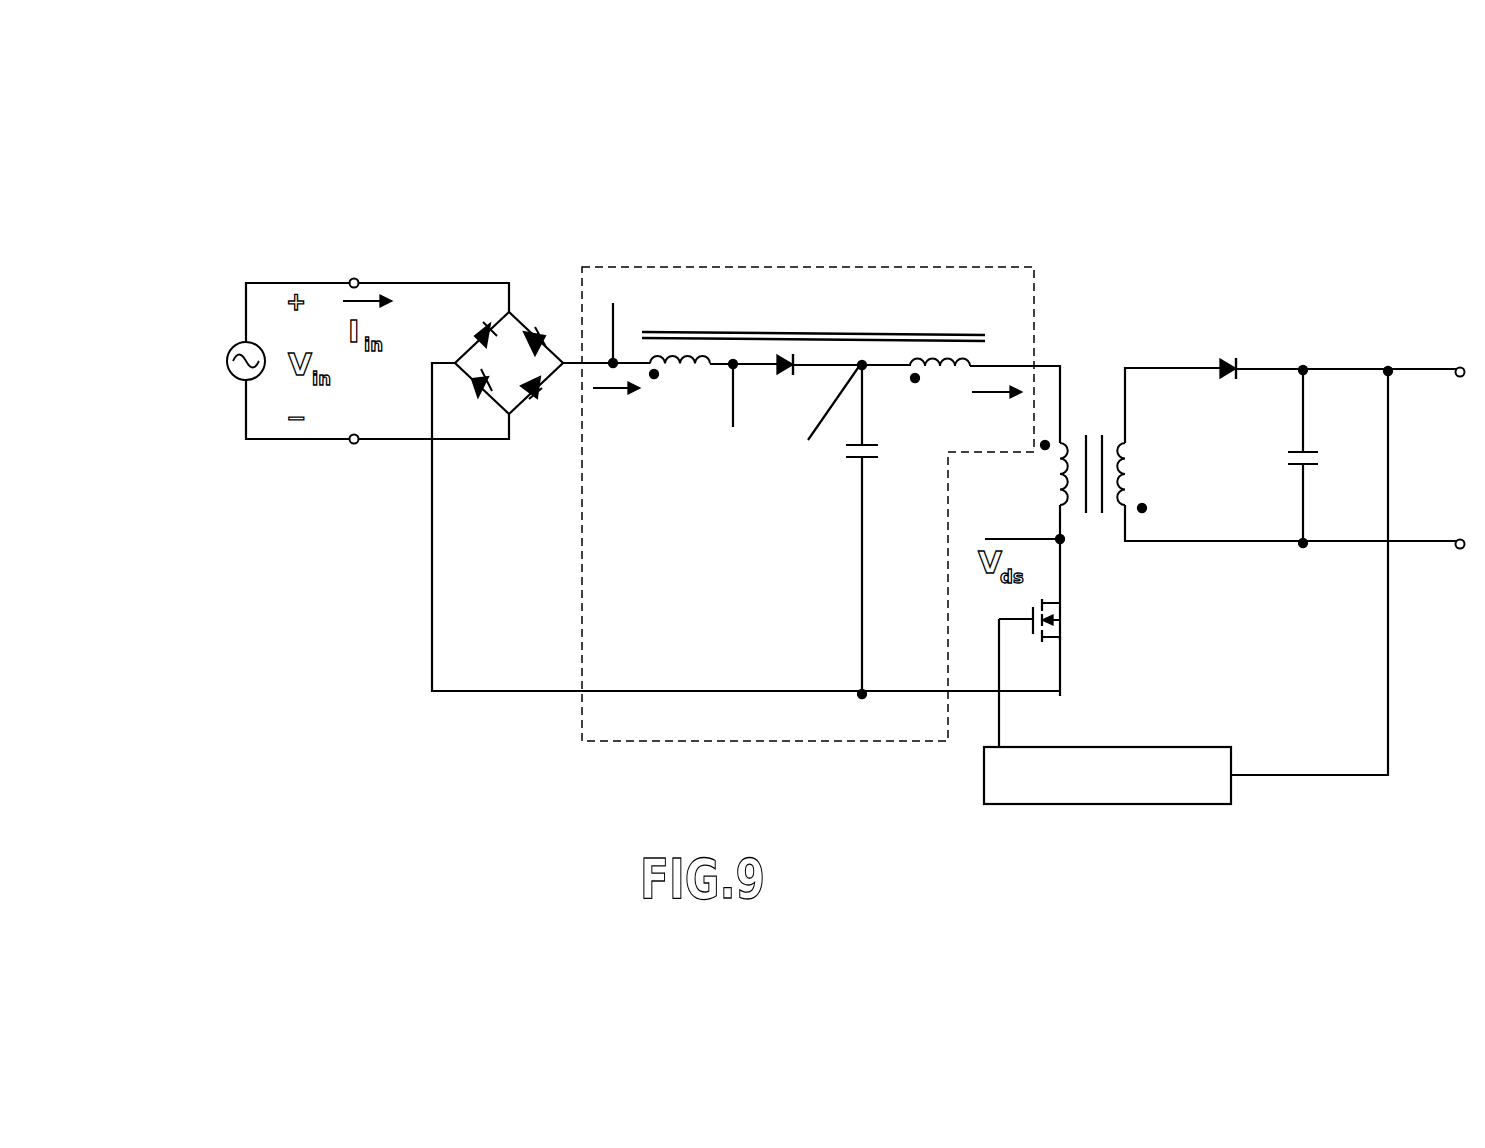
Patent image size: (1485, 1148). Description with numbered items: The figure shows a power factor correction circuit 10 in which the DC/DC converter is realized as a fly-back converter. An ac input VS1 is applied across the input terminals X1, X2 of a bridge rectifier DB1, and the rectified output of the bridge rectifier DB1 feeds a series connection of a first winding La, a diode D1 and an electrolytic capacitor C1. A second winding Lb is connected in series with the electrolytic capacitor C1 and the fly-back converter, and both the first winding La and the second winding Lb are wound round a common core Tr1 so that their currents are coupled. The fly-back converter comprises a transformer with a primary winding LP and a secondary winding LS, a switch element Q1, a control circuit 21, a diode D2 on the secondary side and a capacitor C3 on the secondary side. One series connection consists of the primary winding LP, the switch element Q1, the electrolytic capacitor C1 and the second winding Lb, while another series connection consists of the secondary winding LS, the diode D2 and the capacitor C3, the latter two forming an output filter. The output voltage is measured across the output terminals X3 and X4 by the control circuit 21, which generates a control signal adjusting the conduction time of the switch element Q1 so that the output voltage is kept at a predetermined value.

The power factor correction circuit 10 is at (871, 479).
The control circuit 21 is at (1221, 797).
The ac input VS1 is at (217, 354).
The input terminal X1 is at (362, 264).
The input terminal X2 is at (362, 462).
The output terminal X3 is at (1462, 350).
The output terminal X4 is at (1462, 567).
The bridge rectifier DB1 is at (516, 327).
The first winding La is at (680, 386).
The second winding Lb is at (940, 387).
The common core Tr1 is at (813, 308).
The diode D1 is at (792, 386).
The electrolytic capacitor C1 is at (887, 532).
The primary winding LP is at (1035, 475).
The secondary winding LS is at (1149, 478).
The switch element Q1 is at (1055, 623).
The diode D2 is at (1231, 340).
The capacitor C3 is at (1327, 456).